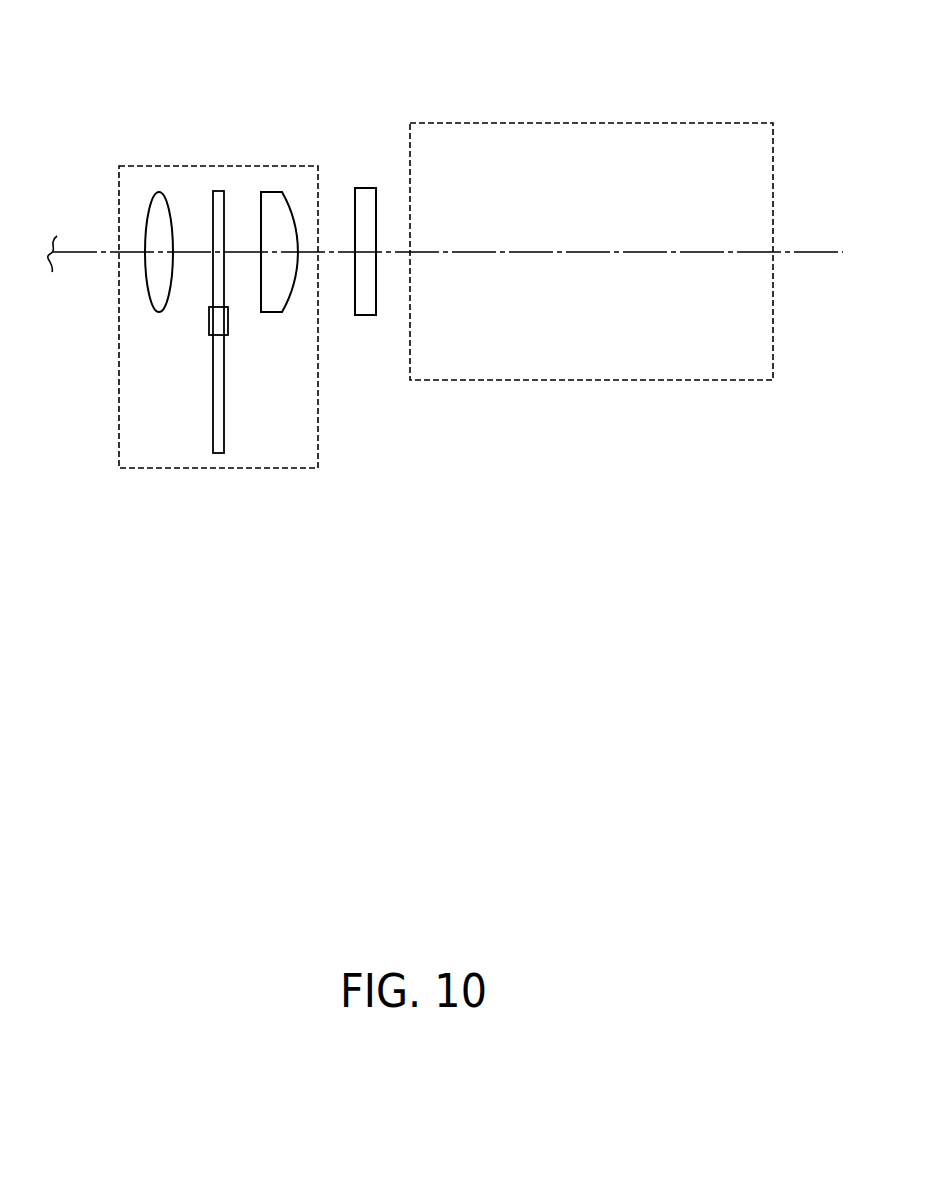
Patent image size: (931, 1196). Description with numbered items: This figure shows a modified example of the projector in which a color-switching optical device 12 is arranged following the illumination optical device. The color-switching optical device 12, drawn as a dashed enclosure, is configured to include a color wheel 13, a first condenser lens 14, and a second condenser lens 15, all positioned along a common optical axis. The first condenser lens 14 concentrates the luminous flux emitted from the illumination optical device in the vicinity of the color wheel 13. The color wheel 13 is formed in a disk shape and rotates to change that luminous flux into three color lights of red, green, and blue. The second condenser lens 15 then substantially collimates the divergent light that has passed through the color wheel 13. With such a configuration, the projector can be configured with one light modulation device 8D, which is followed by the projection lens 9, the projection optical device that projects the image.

The projection lens 9 is at (571, 123).
The light modulation device 8D is at (365, 188).
The color-switching optical device 12 is at (220, 165).
The color wheel 13 is at (220, 412).
The first condenser lens 14 is at (153, 198).
The second condenser lens 15 is at (292, 200).